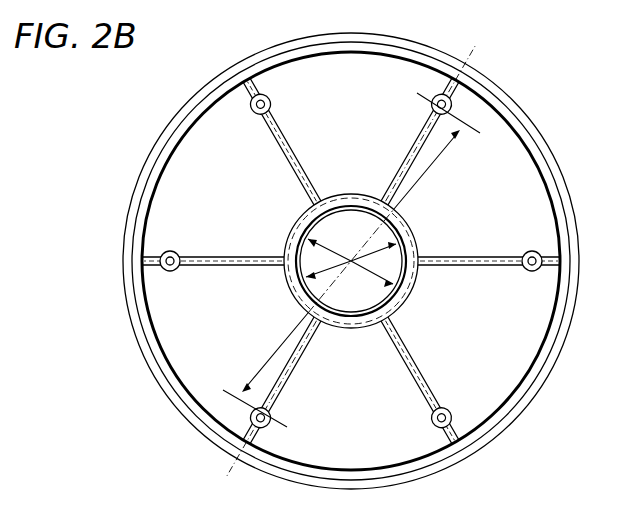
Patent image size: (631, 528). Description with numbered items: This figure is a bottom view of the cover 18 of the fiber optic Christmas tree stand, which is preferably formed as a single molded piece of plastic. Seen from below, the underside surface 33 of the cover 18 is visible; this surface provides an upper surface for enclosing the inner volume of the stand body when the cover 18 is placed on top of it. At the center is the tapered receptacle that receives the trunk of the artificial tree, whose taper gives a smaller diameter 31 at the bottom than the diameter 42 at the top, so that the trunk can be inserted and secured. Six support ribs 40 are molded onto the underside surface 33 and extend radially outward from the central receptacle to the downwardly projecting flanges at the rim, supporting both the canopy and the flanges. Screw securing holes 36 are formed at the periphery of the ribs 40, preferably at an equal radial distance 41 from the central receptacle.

The cover 18 is at (513, 94).
The smaller diameter 31 is at (378, 268).
The underside surface 33 is at (397, 68).
The screw securing holes 36 is at (252, 98).
The support ribs 40 is at (291, 140).
The equal radial distance 41 is at (437, 158).
The diameter at the top of the receptacle 42 is at (322, 268).